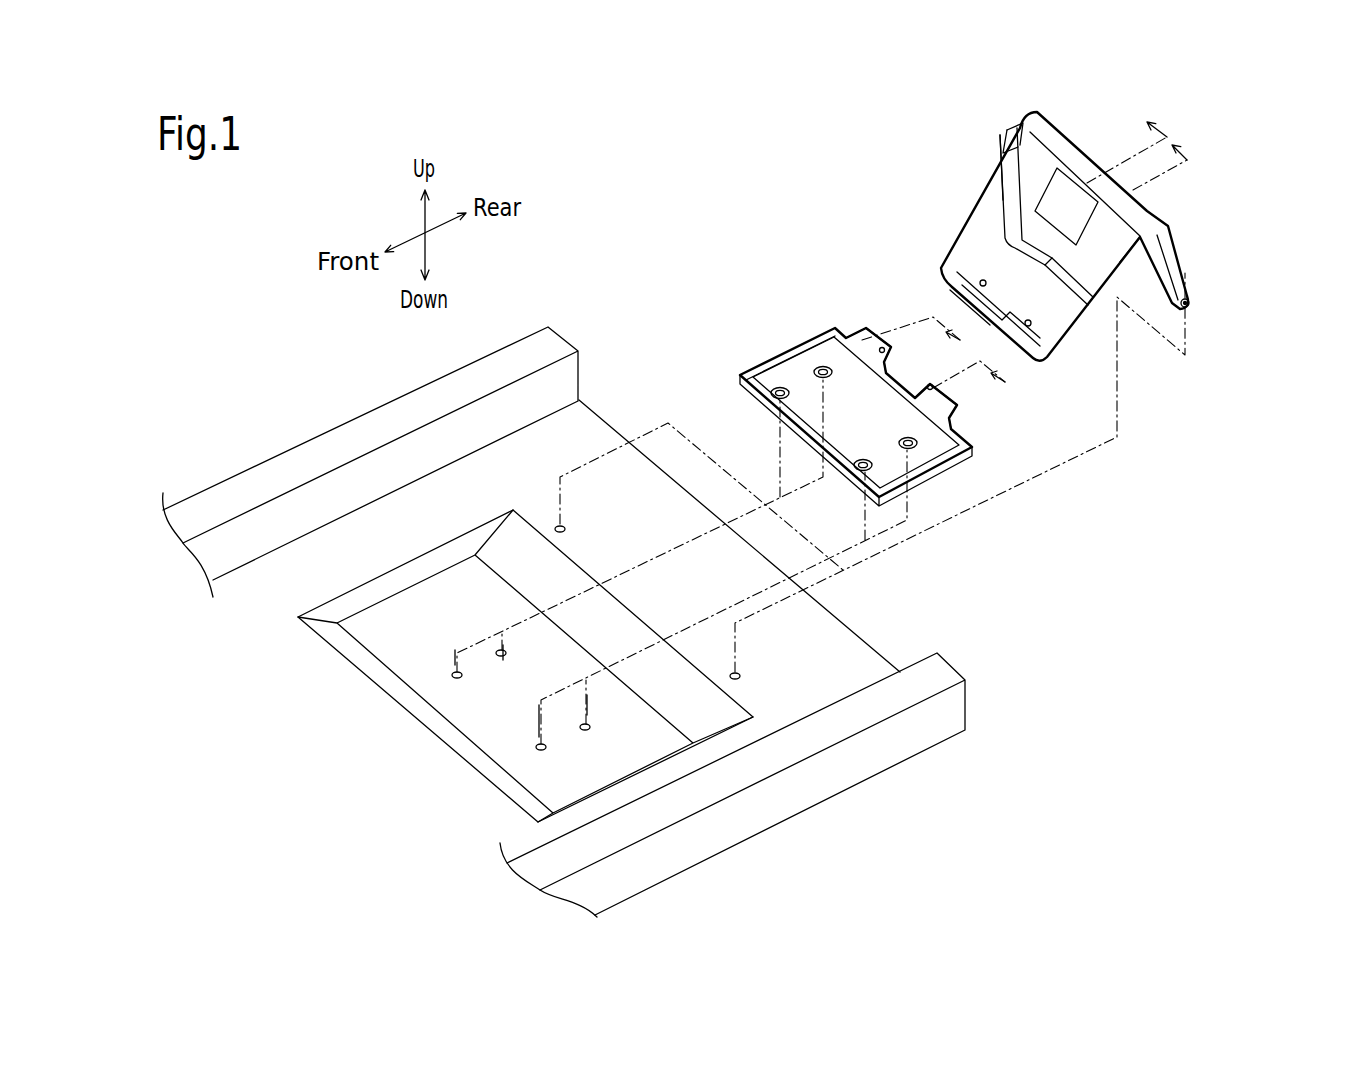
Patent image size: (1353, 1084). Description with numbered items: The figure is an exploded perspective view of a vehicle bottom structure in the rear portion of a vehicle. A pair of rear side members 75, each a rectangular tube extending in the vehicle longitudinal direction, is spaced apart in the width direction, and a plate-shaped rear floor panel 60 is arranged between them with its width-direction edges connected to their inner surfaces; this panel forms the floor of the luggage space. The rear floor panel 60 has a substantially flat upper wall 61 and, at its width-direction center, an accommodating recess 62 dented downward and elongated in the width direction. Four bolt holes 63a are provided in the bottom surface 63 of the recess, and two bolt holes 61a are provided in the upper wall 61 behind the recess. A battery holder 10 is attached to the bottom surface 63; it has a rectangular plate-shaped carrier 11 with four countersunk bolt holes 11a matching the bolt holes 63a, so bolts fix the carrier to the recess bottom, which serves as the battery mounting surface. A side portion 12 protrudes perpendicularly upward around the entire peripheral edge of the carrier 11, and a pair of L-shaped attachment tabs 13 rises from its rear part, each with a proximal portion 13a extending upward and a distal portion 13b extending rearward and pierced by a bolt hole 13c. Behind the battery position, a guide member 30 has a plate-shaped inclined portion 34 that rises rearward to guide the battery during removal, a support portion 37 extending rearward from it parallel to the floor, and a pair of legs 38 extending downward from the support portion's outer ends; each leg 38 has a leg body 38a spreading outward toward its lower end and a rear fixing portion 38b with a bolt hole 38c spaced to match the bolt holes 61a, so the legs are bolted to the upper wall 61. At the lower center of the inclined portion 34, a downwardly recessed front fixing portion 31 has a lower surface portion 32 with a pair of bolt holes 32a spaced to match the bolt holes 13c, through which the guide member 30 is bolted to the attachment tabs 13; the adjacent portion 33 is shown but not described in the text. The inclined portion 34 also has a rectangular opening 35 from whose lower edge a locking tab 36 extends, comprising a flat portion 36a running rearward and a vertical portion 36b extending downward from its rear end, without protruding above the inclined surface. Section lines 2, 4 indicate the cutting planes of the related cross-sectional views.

The battery holder 10 is at (755, 364).
The carrier 11 is at (852, 423).
The bolt holes 11a is at (818, 371).
The side portion 12 is at (803, 343).
The attachment tabs 13 is at (867, 318).
The proximal portion 13a is at (848, 337).
The distal portion 13b is at (850, 322).
The bolt hole 13c is at (883, 348).
The guide member 30 is at (1070, 133).
The front fixing portion 31 is at (980, 245).
The lower surface portion 32 is at (947, 283).
The bolt holes 32a is at (980, 286).
The flange extension 33 is at (940, 278).
The inclined portion 34 is at (1090, 255).
The opening 35 is at (1036, 208).
The locking tab 36 is at (983, 232).
The flat portion 36a is at (997, 210).
The vertical portion 36b is at (1063, 280).
The support portion 37 is at (1137, 200).
The legs 38 is at (940, 105).
The leg body 38a is at (1020, 122).
The rear fixing portion 38b is at (1003, 153).
The bolt hole 38c is at (1190, 306).
The rear floor panel 60 is at (594, 430).
The upper wall 61 is at (510, 487).
The bolt holes 61a is at (565, 529).
The accommodating recess 62 is at (427, 660).
The bottom surface 63 is at (445, 627).
The bolt holes 63a is at (499, 658).
The rear side members 75 is at (363, 407).
The section line II 2 is at (1065, 256).
The section line IV 4 is at (1018, 227).